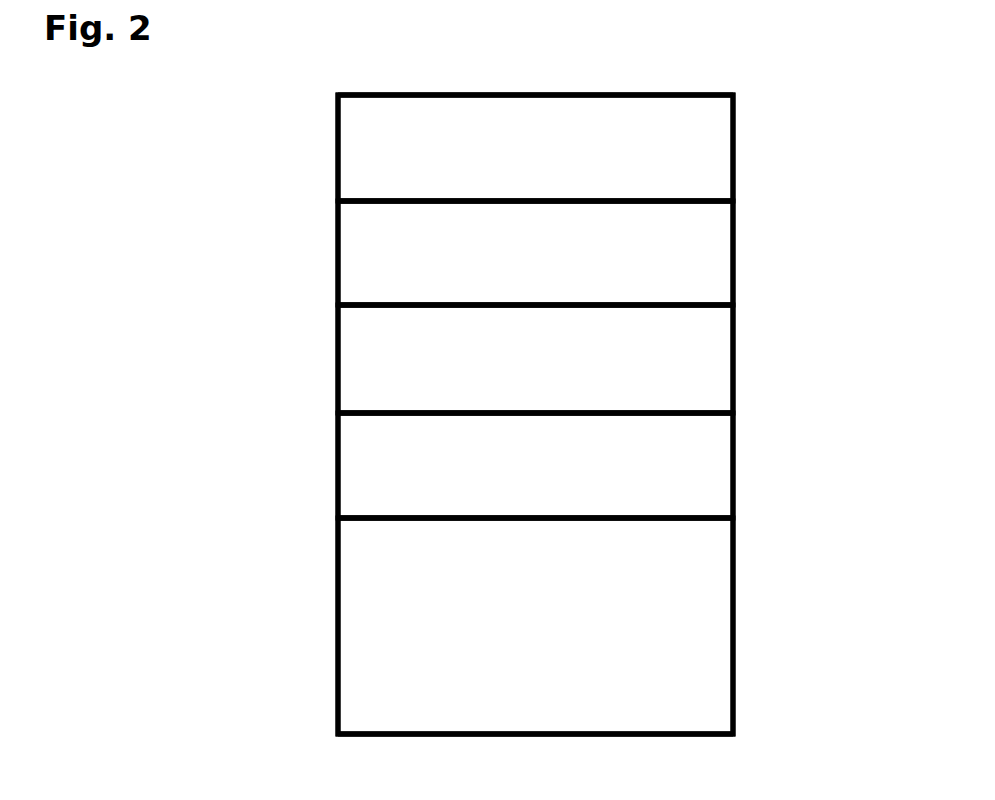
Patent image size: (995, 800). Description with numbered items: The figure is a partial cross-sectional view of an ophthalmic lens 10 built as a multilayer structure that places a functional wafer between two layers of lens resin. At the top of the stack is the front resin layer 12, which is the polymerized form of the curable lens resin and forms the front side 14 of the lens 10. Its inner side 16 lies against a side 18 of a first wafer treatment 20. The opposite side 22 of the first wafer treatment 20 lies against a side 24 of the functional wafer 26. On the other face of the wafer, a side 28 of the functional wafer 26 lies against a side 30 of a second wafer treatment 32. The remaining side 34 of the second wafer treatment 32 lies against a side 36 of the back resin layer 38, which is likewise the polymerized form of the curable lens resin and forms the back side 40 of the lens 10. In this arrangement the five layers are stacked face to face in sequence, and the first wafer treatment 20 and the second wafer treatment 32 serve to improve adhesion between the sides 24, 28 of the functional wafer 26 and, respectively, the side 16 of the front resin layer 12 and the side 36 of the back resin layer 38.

The lens 10 is at (785, 132).
The front resin layer 12 is at (685, 93).
The front side 14 is at (480, 93).
The side of the front resin layer 16 is at (400, 198).
The side of the first wafer treatment 18 is at (481, 203).
The first wafer treatment 20 is at (737, 248).
The side of the first wafer treatment 22 is at (562, 302).
The side of the functional wafer 24 is at (478, 307).
The functional wafer 26 is at (736, 358).
The side of the functional wafer 28 is at (575, 410).
The side of the second wafer treatment 30 is at (530, 416).
The second wafer treatment 32 is at (736, 462).
The side of the second wafer treatment 34 is at (598, 515).
The side of the back resin layer 36 is at (538, 521).
The back resin layer 38 is at (736, 600).
The back side 40 is at (572, 737).